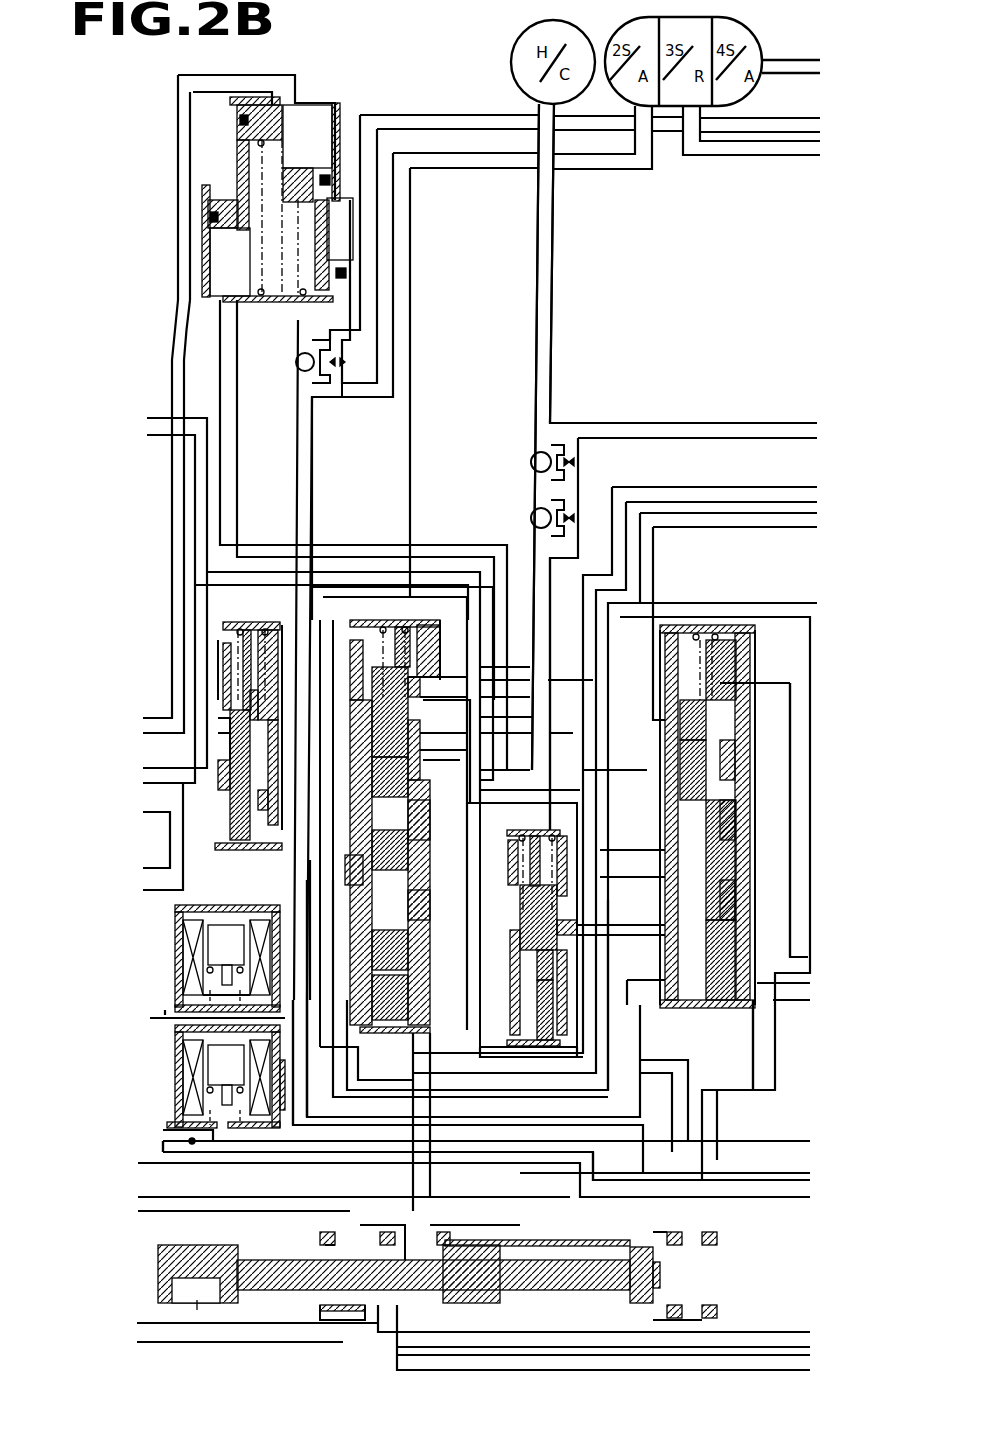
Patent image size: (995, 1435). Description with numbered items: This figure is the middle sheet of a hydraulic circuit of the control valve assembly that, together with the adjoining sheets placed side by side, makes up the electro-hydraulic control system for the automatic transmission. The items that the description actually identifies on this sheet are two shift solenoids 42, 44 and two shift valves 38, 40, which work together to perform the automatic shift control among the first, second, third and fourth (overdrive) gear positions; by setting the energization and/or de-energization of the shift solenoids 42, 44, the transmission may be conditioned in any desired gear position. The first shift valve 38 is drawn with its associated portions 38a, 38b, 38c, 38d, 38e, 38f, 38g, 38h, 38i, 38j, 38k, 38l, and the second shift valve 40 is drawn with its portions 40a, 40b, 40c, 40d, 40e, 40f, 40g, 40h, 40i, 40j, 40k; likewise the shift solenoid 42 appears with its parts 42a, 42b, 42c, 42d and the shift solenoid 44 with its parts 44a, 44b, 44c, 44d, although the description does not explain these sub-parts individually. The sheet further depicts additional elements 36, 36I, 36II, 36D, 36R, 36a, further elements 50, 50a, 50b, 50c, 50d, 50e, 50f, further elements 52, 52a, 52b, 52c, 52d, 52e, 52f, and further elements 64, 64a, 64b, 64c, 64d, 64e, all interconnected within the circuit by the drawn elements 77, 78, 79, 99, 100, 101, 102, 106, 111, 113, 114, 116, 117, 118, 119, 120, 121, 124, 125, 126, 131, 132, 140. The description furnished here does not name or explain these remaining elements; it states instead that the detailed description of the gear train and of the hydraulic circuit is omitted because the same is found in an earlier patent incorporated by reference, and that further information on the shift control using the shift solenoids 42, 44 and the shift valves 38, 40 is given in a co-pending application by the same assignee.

The manual valve 36 is at (340, 1350).
The manual valve port I 36I is at (335, 1240).
The manual valve port II 36II is at (368, 1330).
The manual valve port D 36D is at (440, 1240).
The manual valve port R 36R is at (670, 1315).
The manual valve spool 36a is at (660, 1278).
The shift valve 38 is at (385, 1032).
The shift valve end chamber 38a is at (365, 625).
The shift valve land 38b is at (382, 665).
The shift valve end chamber 38c is at (440, 1033).
The shift valve land 38d is at (378, 730).
The shift valve land 38e is at (430, 740).
The shift valve land 38f is at (375, 850).
The shift valve port 38g is at (355, 860).
The shift valve land 38h is at (370, 950).
The shift valve land 38i is at (365, 990).
The shift valve port 38j is at (418, 672).
The shift valve port 38k is at (435, 820).
The shift valve port 38l is at (440, 912).
The shift valve 40 is at (690, 1010).
The shift valve end chamber 40a is at (730, 635).
The shift valve spring 40b is at (748, 640).
The shift valve end chamber 40c is at (725, 1008).
The shift valve land 40d is at (675, 720).
The shift valve port 40e is at (752, 760).
The shift valve land 40f is at (665, 790).
The shift valve port 40g is at (752, 830).
The shift valve port 40h is at (752, 895).
The shift valve land 40i is at (752, 920).
The shift valve land 40j is at (745, 690).
The shift valve land 40k is at (752, 862).
The shift solenoid 42 is at (232, 908).
The solenoid coil 42a is at (180, 930).
The solenoid plunger 42b is at (215, 955).
The solenoid valve port 42c is at (205, 980).
The solenoid valve element 42d is at (210, 970).
The shift solenoid 44 is at (160, 1045).
The solenoid coil 44a is at (180, 1050).
The solenoid plunger 44b is at (215, 1075).
The solenoid valve port 44c is at (275, 1110).
The solenoid valve element 44d is at (210, 1090).
The pressure regulating valve 50 is at (280, 590).
The valve end chamber 50a is at (272, 625).
The valve spool 50b is at (275, 700).
The valve port 50c is at (262, 808).
The valve port 50d is at (222, 800).
The valve end chamber 50e is at (220, 845).
The valve land 50f is at (262, 720).
The accumulator control valve 52 is at (510, 947).
The valve end chamber 52a is at (533, 845).
The valve end chamber 52b is at (522, 1010).
The valve land 52c is at (520, 950).
The valve land 52d is at (512, 985).
The valve land 52e is at (512, 1005).
The valve port 52f is at (567, 925).
The lock-up clutch control valve 64 is at (320, 95).
The valve piston 64a is at (272, 108).
The valve spring 64b is at (262, 245).
The valve plunger 64c is at (345, 240).
The valve chamber 64d is at (315, 130).
The valve chamber 64e is at (225, 245).
The oil passage 77 is at (540, 1345).
The oil passage 78 is at (185, 1215).
The oil passage 79 is at (148, 1146).
The oil passage 99 is at (165, 1015).
The oil passage 100 is at (345, 1030).
The oil passage 101 is at (192, 1142).
The oil passage 102 is at (625, 1150).
The oil passage 106 is at (165, 418).
The oil passage 111 is at (418, 545).
The oil passage 113 is at (385, 310).
The check valve 114 is at (350, 368).
The oil passage 116 is at (307, 915).
The oil passage 117 is at (310, 885).
The oil passage 118 is at (537, 350).
The check valve 119 is at (528, 455).
The check valve 120 is at (528, 515).
The oil passage 121 is at (690, 438).
The oil passage 124 is at (630, 487).
The oil passage 125 is at (565, 660).
The oil passage 126 is at (688, 603).
The oil passage 131 is at (790, 795).
The oil passage 132 is at (753, 1070).
The oil passage 140 is at (665, 1370).